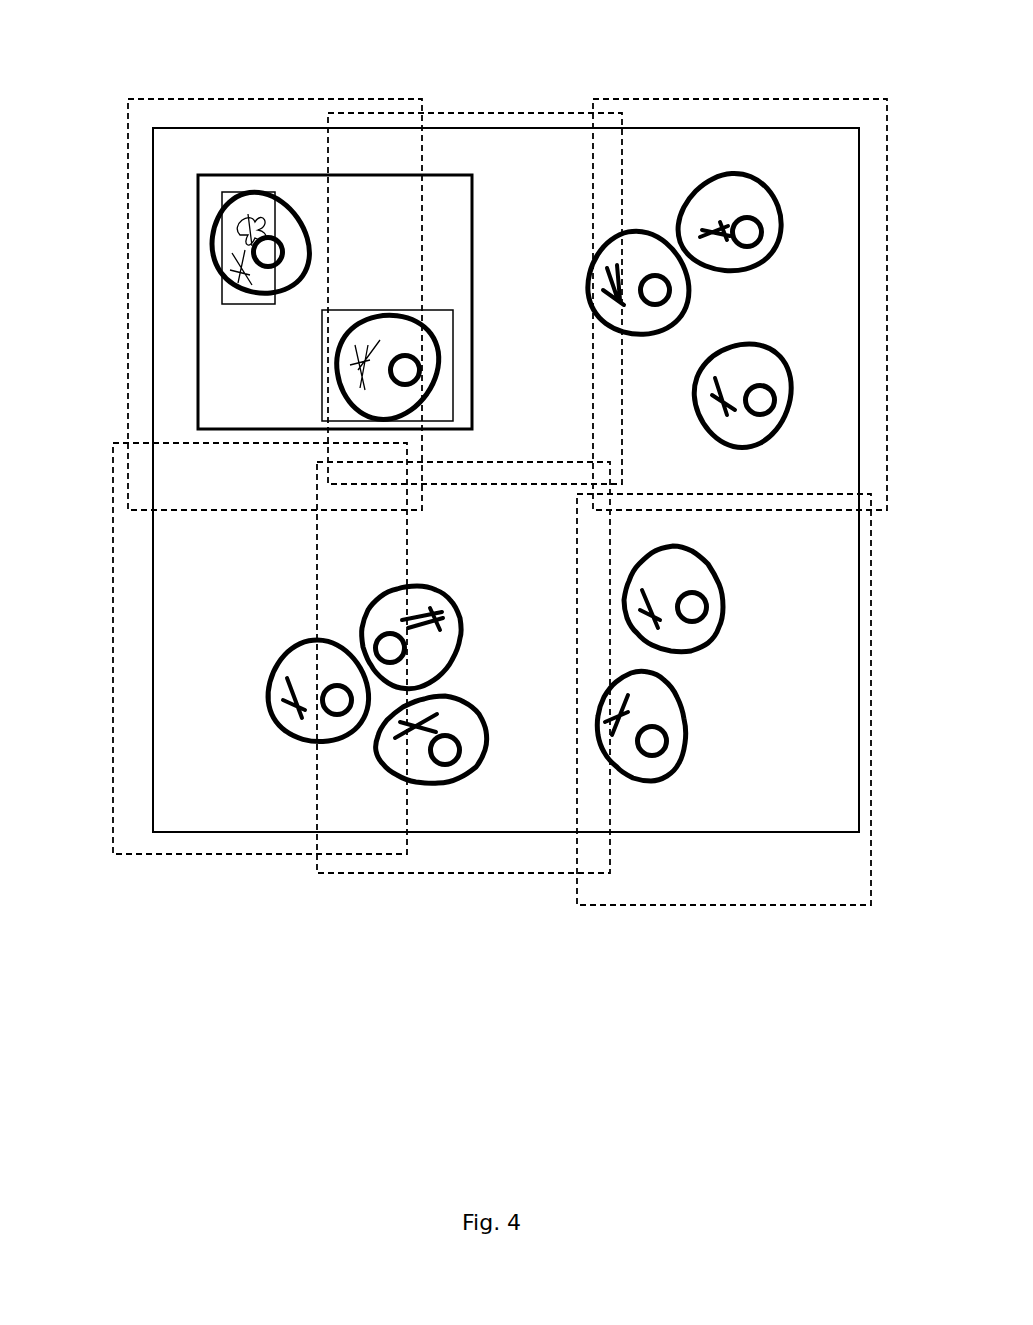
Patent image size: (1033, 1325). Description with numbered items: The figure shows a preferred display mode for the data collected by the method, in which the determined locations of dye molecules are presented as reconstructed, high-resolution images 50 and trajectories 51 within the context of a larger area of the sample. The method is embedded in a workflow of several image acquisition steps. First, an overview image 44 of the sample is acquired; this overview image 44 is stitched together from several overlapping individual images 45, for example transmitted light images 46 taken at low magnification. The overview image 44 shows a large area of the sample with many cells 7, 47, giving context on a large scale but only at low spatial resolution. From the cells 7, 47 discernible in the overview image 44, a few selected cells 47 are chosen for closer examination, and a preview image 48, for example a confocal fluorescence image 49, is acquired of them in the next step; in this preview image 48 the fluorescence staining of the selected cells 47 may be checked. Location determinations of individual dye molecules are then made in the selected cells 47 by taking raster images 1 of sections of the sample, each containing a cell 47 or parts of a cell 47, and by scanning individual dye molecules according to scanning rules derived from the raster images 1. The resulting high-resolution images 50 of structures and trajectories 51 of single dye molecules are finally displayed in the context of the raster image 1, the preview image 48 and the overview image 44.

The raster image 1 is at (259, 213).
The cell 7 is at (690, 307).
The overview image 44 is at (703, 127).
The individual image 45 is at (267, 860).
The transmitted light image 46 is at (500, 513).
The selected cell 47 is at (215, 213).
The preview image 48 is at (299, 218).
The confocal fluorescence image 49 is at (222, 173).
The high-resolution image 50 is at (358, 368).
The trajectory 51 is at (237, 228).